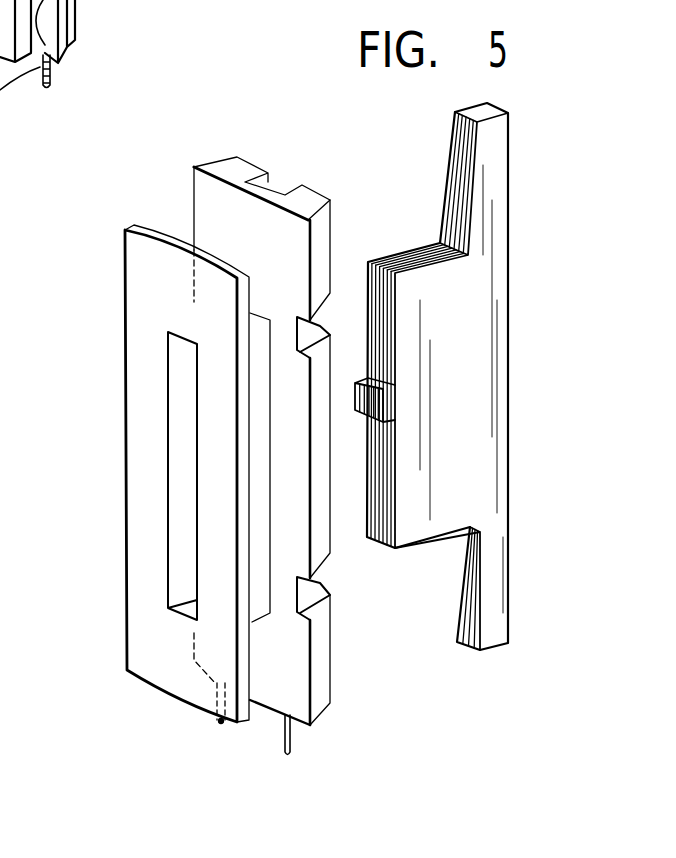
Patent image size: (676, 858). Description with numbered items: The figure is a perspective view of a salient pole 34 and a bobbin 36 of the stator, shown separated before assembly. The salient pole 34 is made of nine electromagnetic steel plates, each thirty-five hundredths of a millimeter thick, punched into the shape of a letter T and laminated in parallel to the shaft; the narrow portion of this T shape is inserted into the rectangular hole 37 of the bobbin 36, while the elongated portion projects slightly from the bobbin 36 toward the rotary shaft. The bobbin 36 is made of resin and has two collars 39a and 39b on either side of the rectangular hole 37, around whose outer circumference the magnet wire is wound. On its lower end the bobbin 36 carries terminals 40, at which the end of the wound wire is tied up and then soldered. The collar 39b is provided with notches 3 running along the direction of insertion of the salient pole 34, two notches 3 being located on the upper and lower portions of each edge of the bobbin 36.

The bobbin 36 is at (125, 383).
The collar 39a is at (137, 268).
The collar 39b is at (227, 165).
The rectangular hole 37 is at (183, 580).
The terminals 40 is at (222, 724).
The notches 3 is at (328, 313).
The salient pole 34 is at (500, 342).